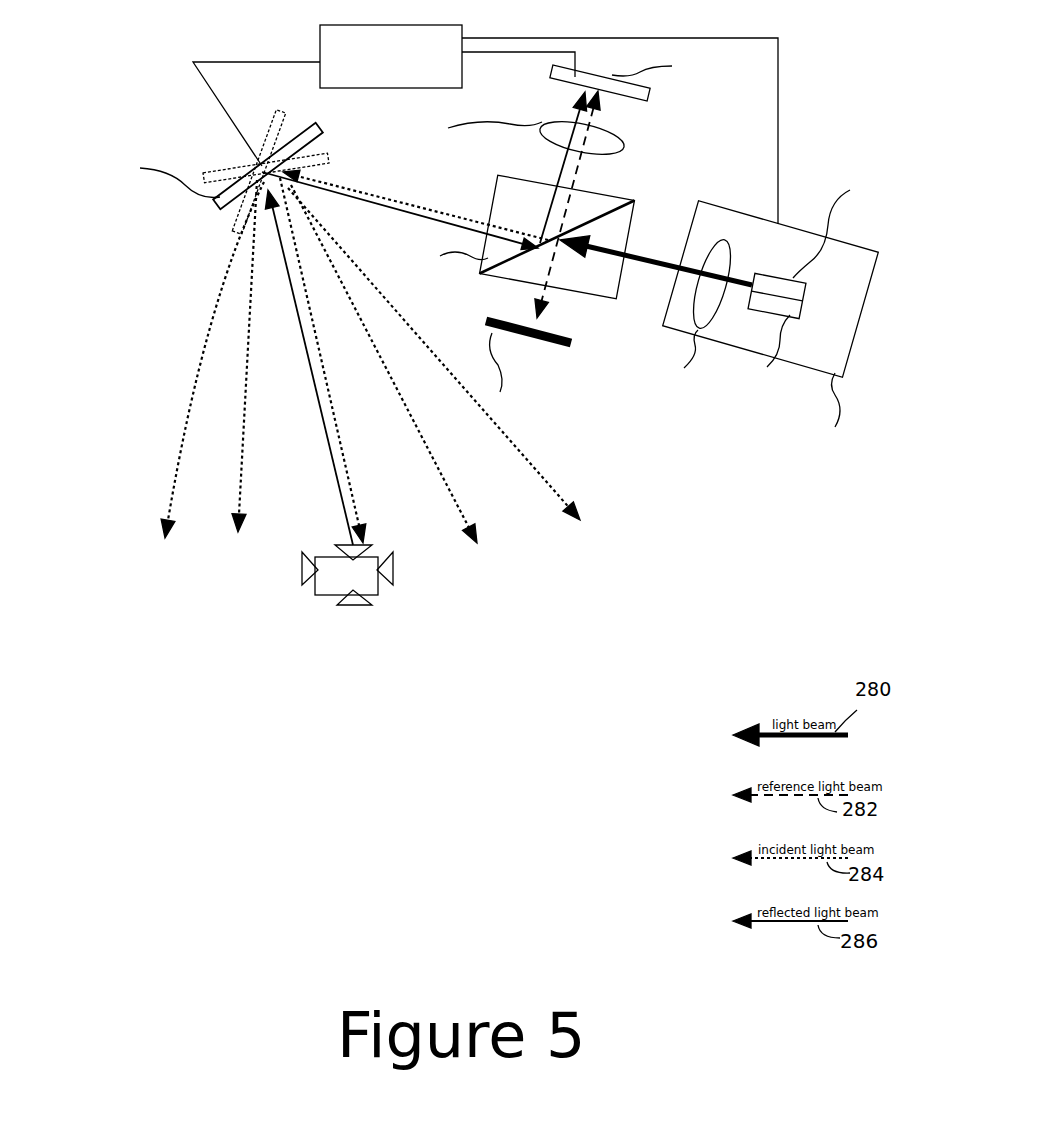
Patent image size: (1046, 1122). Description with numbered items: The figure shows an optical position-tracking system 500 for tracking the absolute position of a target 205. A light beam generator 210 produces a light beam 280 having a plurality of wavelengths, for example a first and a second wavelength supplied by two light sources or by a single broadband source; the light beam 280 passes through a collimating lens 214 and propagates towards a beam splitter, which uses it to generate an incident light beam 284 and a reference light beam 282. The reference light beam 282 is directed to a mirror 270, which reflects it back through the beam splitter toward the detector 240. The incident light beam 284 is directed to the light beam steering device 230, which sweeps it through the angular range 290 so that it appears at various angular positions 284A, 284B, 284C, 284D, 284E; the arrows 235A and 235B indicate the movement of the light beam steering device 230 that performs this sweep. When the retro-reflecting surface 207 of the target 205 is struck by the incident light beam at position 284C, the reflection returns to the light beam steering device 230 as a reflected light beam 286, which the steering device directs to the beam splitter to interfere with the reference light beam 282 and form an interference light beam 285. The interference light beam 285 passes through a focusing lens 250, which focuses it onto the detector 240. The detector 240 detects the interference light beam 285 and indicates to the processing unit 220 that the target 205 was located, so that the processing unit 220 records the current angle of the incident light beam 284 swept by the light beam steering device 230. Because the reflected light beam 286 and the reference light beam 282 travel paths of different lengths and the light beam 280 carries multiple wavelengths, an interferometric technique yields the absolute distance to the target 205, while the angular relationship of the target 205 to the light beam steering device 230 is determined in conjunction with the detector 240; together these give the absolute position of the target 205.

The optical position-tracking system 500 is at (822, 50).
The processing unit 220 is at (442, 25).
The light beam steering device 230 is at (218, 200).
The arrow 235A is at (213, 250).
The arrow 235B is at (310, 98).
The detector 240 is at (650, 93).
The interference light beam 285 is at (568, 108).
The focusing lens 250 is at (640, 142).
The mirror 270 is at (572, 340).
The light beam 280 is at (630, 252).
The reference light beam 282 is at (577, 175).
The incident light beam 284 is at (387, 201).
The incident light beam angular position 284A is at (178, 482).
The incident light beam angular position 284B is at (242, 481).
The incident light beam angular position 284C is at (354, 489).
The incident light beam angular position 284D is at (448, 486).
The incident light beam angular position 284E is at (543, 475).
The reflected light beam 286 is at (356, 206).
The angular range 290 is at (418, 313).
The light beam generator 210 is at (855, 353).
The collimating lens 214 is at (725, 240).
The target 205 is at (367, 585).
The retro-reflecting surface 207 is at (317, 596).